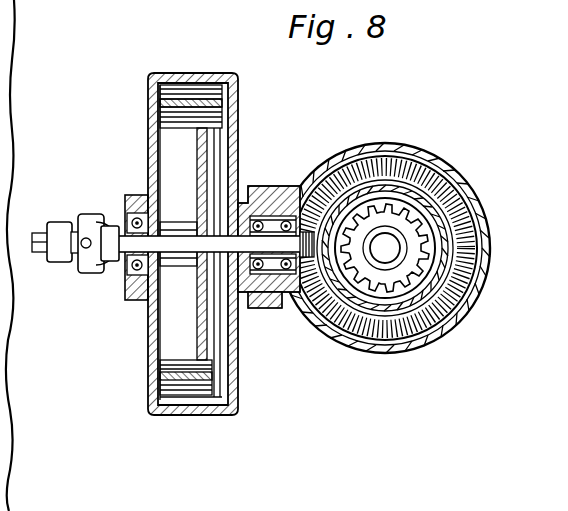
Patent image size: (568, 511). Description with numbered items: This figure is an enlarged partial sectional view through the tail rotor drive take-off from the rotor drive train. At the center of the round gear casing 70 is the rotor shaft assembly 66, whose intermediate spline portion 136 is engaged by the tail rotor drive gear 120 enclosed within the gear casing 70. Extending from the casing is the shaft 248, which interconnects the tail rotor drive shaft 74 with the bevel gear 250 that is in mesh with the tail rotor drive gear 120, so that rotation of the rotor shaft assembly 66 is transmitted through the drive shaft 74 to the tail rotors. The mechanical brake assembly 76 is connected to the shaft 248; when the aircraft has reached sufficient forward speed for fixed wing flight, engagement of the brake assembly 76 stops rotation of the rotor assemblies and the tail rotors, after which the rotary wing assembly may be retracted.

The rotor shaft assembly 66 is at (370, 262).
The gear casing 70 is at (342, 150).
The drive shaft 74 is at (41, 228).
The mechanical brake assembly 76 is at (186, 68).
The tail rotor drive gear 120 is at (419, 153).
The intermediate spline portion 136 is at (402, 215).
The shaft 248 is at (170, 240).
The bevel gear 250 is at (305, 308).